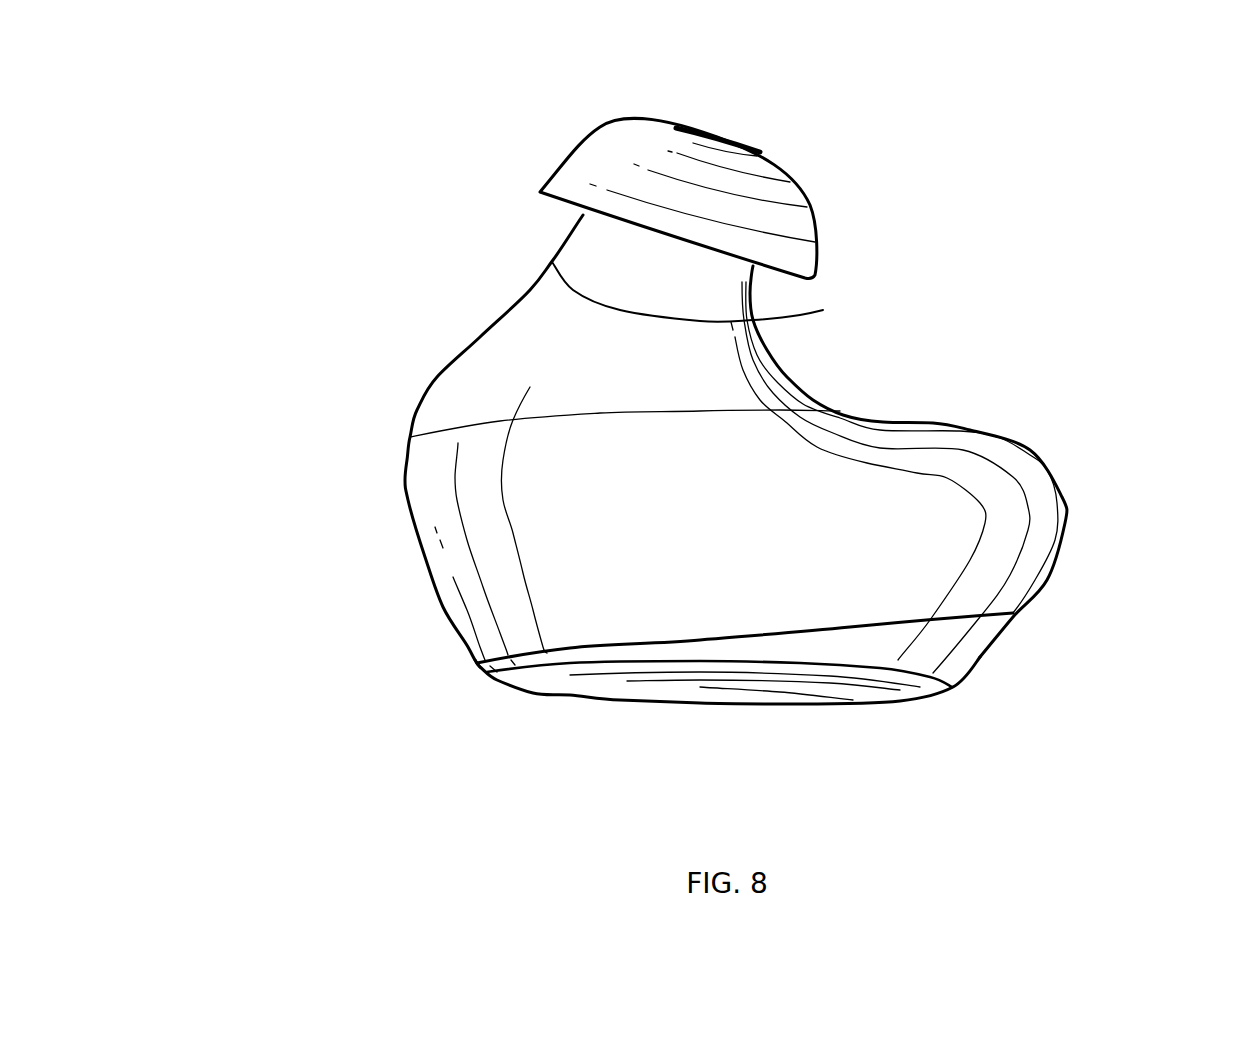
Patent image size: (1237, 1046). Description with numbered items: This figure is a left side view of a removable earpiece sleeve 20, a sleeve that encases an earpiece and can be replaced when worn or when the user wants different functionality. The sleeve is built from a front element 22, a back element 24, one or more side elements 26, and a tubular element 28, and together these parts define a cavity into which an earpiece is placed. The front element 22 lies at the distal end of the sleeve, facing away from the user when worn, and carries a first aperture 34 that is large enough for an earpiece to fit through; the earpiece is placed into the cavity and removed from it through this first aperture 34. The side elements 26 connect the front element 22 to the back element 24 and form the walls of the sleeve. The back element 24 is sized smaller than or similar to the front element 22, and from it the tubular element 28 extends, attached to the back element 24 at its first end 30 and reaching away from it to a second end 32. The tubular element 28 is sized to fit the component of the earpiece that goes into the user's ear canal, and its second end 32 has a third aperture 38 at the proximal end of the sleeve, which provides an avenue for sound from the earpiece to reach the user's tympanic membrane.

The removable earpiece sleeve 20 is at (326, 185).
The front element 22 is at (950, 647).
The back element 24 is at (747, 395).
The side element 26 is at (462, 558).
The tubular element 28 is at (590, 242).
The first end 30 is at (823, 310).
The second end 32 is at (597, 152).
The first aperture 34 is at (698, 687).
The third aperture 38 is at (717, 135).